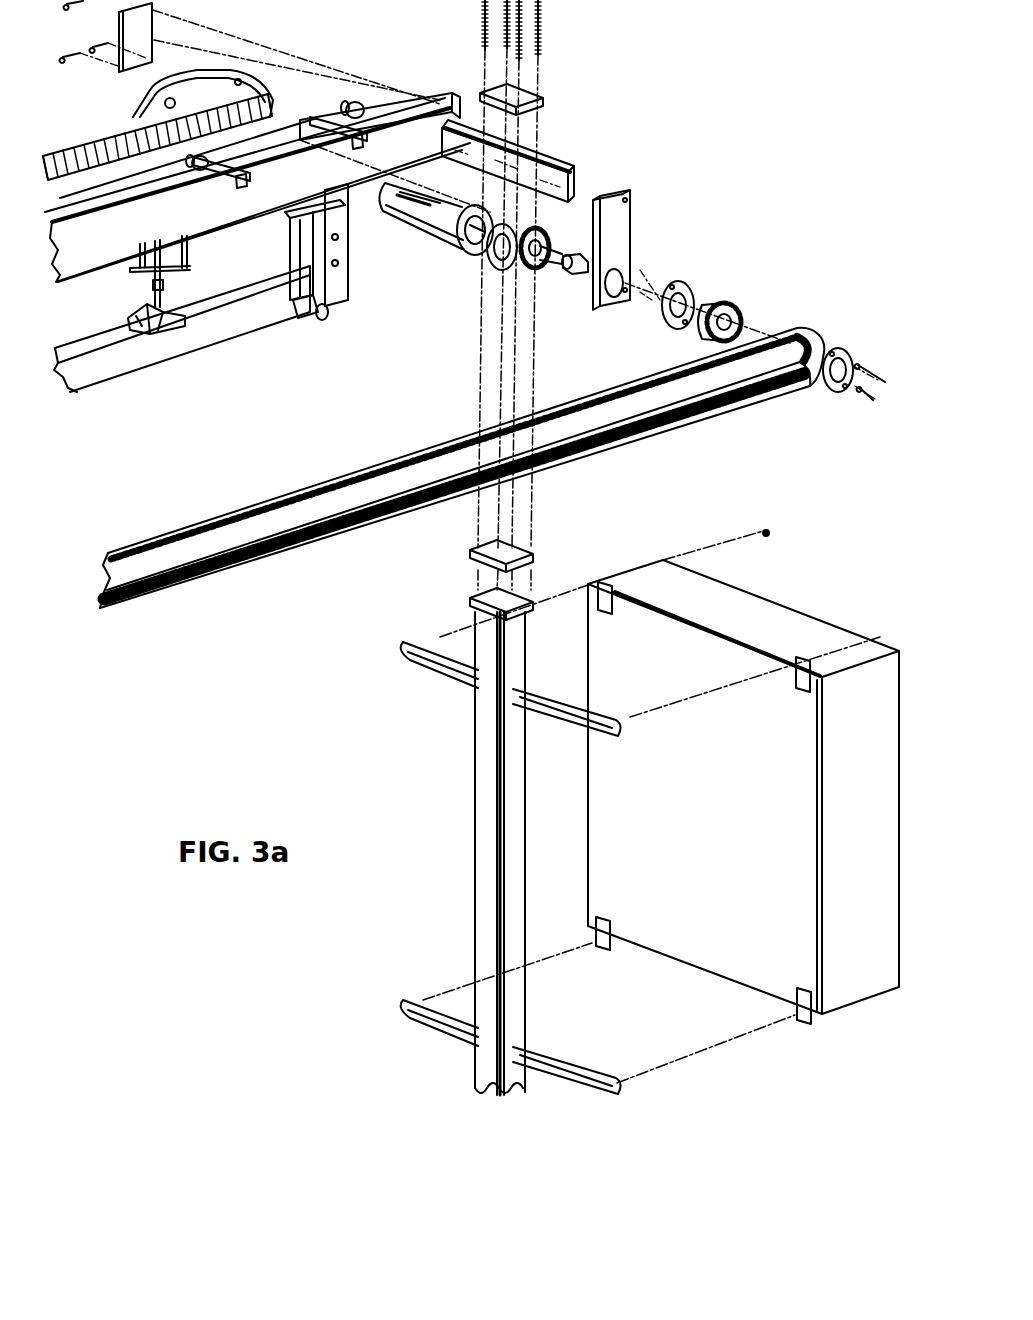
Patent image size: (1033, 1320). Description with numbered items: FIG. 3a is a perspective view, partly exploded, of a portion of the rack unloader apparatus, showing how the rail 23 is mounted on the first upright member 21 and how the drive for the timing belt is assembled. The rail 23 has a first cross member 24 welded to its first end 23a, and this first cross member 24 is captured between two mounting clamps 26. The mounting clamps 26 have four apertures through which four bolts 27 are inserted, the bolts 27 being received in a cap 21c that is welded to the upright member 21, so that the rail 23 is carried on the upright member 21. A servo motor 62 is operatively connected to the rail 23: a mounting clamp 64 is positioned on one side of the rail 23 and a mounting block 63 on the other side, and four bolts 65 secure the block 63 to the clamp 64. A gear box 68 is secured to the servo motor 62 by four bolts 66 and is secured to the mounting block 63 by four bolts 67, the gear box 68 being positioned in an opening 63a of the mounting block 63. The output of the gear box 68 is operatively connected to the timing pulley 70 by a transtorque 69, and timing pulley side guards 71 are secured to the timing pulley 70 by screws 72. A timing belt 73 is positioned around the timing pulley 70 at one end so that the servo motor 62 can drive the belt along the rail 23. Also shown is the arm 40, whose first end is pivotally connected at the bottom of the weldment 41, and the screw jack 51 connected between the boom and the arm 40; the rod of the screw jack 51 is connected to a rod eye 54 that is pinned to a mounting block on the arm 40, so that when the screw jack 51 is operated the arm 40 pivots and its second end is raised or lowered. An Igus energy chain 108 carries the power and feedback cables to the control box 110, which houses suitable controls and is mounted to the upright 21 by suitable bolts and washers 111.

The first upright member 21 is at (473, 834).
The cap 21c is at (470, 601).
The rail 23 is at (95, 262).
The first end of rail 23a is at (444, 96).
The first cross member 24 is at (553, 158).
The mounting clamp 26 is at (546, 103).
The bolt 27 is at (545, 30).
The arm 40 is at (127, 368).
The weldment 41 is at (337, 253).
The screw jack 51 is at (180, 253).
The rod eye 54 is at (165, 289).
The servo motor 62 is at (392, 220).
The mounting block 63 is at (632, 241).
The opening 63a is at (626, 278).
The mounting clamp 64 is at (154, 27).
The bolt 65 is at (72, 58).
The bolt 66 is at (417, 233).
The bolt 67 is at (530, 273).
The gear box 68 is at (492, 268).
The transtorque 69 is at (569, 280).
The timing pulley 70 is at (729, 299).
The timing pulley side guard 71 is at (668, 320).
The screw 72 is at (652, 310).
The timing belt 73 is at (160, 598).
The energy chain 108 is at (88, 153).
The control box 110 is at (722, 850).
The bolts and washers 111 is at (769, 532).